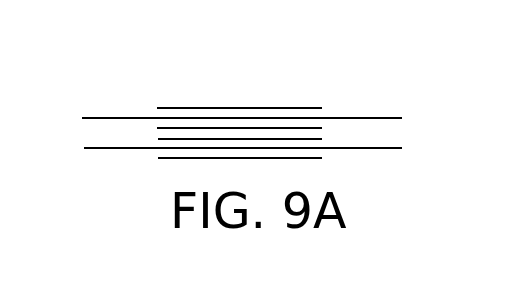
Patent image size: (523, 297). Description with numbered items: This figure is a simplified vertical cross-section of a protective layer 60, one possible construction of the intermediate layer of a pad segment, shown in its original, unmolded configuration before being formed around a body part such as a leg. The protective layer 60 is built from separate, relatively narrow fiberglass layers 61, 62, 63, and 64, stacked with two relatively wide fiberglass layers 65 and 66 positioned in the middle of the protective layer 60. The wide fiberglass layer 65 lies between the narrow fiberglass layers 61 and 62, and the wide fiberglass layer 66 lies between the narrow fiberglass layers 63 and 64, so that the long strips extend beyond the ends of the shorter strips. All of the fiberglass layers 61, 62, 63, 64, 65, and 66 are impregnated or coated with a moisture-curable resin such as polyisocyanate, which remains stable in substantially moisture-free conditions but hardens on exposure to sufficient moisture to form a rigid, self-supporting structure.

The protective layer 60 is at (68, 104).
The fiberglass layer 61 is at (160, 108).
The fiberglass layer 62 is at (211, 128).
The fiberglass layer 63 is at (270, 139).
The fiberglass layer 64 is at (172, 158).
The wide fiberglass layer 65 is at (377, 118).
The wide fiberglass layer 66 is at (358, 148).